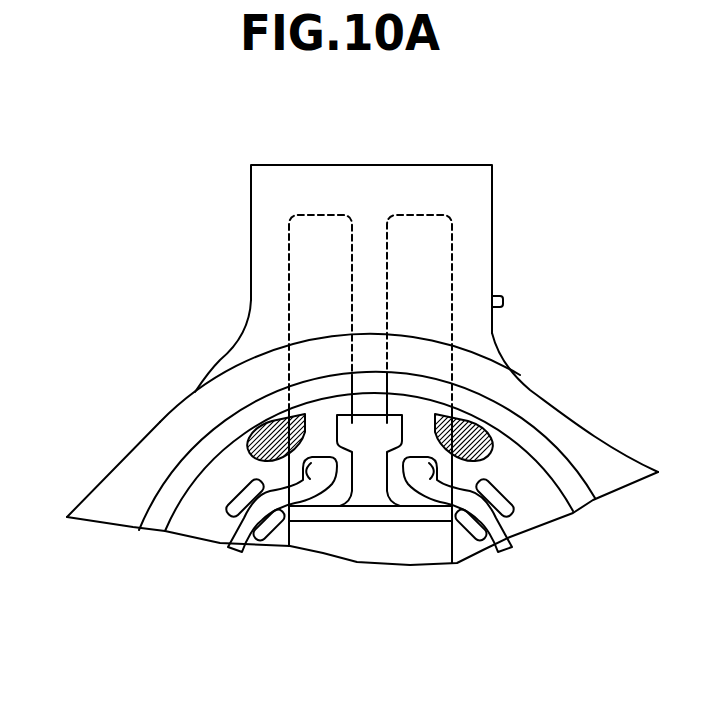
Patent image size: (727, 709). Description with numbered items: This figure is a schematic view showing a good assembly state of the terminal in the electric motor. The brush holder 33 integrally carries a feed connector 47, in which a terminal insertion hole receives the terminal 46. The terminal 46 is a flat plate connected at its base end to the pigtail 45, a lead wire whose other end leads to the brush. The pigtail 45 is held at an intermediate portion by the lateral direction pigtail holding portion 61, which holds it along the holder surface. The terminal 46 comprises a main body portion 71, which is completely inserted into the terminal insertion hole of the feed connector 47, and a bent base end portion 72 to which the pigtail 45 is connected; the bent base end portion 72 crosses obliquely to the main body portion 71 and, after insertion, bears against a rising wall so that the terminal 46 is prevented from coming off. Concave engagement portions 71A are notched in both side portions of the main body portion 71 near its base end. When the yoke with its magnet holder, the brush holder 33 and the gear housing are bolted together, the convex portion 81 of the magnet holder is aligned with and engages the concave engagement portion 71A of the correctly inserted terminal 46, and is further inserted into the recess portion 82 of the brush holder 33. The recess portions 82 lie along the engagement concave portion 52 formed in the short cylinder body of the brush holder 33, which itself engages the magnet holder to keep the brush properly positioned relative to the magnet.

The brush holder 33 is at (113, 453).
The pigtail 45 is at (233, 533).
The terminal 46 is at (313, 214).
The feed connector 47 is at (484, 184).
The engagement concave portion 52 is at (150, 508).
The lateral direction pigtail holding portion 61 is at (236, 492).
The main body portion 71 is at (288, 245).
The concave engagement portion 71A is at (295, 410).
The bent base end portion 72 is at (346, 487).
The convex portion 81 is at (270, 442).
The recess portion 82 is at (260, 430).